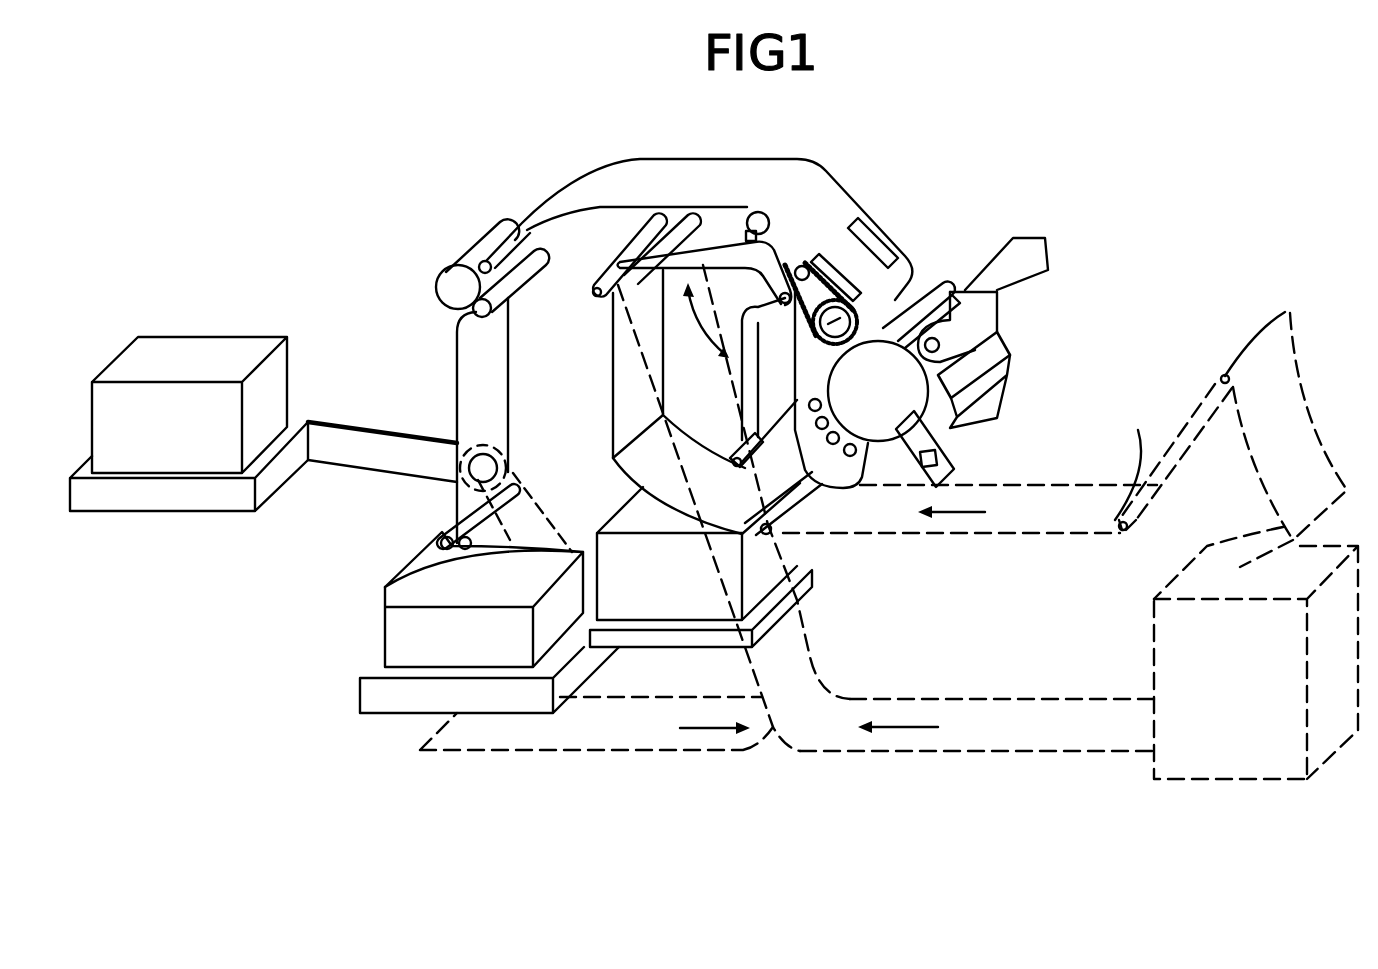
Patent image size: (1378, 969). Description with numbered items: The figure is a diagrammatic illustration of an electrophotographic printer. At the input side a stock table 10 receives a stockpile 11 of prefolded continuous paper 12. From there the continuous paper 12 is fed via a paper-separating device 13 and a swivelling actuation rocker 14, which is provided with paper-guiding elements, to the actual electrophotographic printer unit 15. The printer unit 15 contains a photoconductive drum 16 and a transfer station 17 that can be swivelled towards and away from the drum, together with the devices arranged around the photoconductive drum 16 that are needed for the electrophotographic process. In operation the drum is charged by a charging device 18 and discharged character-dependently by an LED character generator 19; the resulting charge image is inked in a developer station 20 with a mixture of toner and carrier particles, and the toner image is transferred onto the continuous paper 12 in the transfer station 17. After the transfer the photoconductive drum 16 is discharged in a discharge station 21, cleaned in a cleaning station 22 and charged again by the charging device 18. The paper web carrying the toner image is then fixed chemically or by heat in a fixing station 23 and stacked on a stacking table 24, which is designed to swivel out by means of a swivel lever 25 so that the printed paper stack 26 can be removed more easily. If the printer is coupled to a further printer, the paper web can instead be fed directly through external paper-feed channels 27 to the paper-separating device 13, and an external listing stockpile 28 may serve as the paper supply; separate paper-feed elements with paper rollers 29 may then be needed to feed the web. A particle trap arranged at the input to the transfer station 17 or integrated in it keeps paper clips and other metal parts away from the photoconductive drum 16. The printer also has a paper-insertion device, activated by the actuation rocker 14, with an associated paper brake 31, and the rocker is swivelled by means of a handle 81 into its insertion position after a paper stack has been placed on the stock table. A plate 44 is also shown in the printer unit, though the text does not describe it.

The stock table 10 is at (657, 637).
The stockpile 11 is at (698, 600).
The continuous paper 12 is at (623, 375).
The paper-separating device 13 is at (653, 230).
The actuation rocker 14 is at (712, 250).
The electrophotographic printer unit 15 is at (987, 220).
The photoconductive drum 16 is at (890, 430).
The transfer station 17 is at (860, 290).
The charging device 18 is at (1007, 377).
The LED character generator 19 is at (990, 413).
The developer station 20 is at (837, 468).
The discharge station 21 is at (942, 283).
The cleaning station 22 is at (1020, 244).
The fixing station 23 is at (499, 203).
The stacking table 24 is at (407, 693).
The swivel lever 25 is at (343, 448).
The printed paper stack 26 is at (150, 453).
The external paper-feed channels 27 is at (908, 733).
The external listing stockpile 28 is at (1195, 757).
The paper rollers 29 is at (767, 534).
The paper brake 31 is at (823, 172).
The plate 44 is at (883, 233).
The handle 81 is at (597, 296).